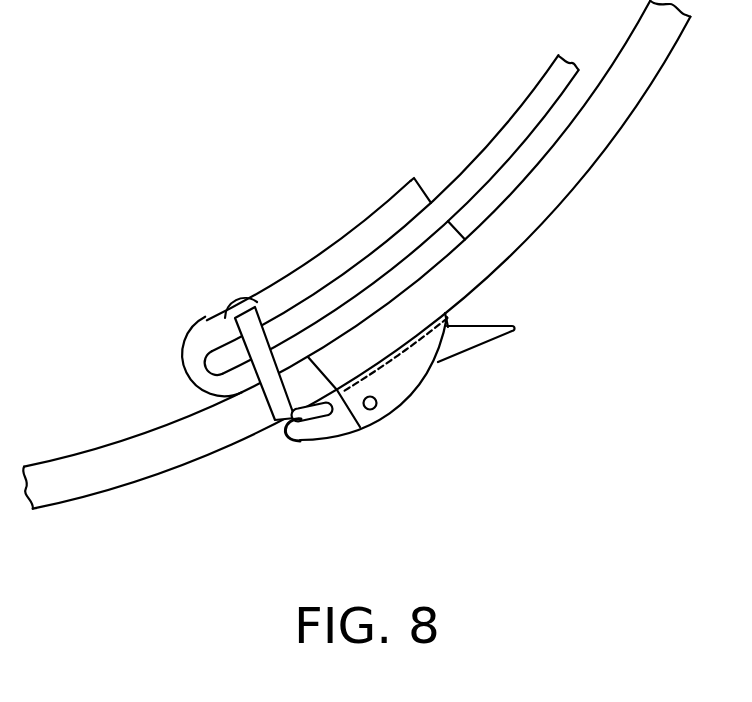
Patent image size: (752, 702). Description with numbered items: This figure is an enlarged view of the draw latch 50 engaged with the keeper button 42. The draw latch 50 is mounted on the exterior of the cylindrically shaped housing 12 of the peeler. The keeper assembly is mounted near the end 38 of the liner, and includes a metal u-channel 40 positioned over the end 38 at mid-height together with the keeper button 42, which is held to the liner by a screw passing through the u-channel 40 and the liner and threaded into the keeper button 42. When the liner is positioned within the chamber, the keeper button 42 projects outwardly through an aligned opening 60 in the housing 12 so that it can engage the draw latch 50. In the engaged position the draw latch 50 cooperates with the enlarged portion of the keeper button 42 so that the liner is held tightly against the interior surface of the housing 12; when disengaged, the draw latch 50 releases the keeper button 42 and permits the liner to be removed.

The housing 12 is at (589, 167).
The end of the liner 38 is at (500, 141).
The u-channel 40 is at (193, 377).
The keeper button 42 is at (313, 445).
The draw latch 50 is at (393, 428).
The opening 60 is at (257, 402).